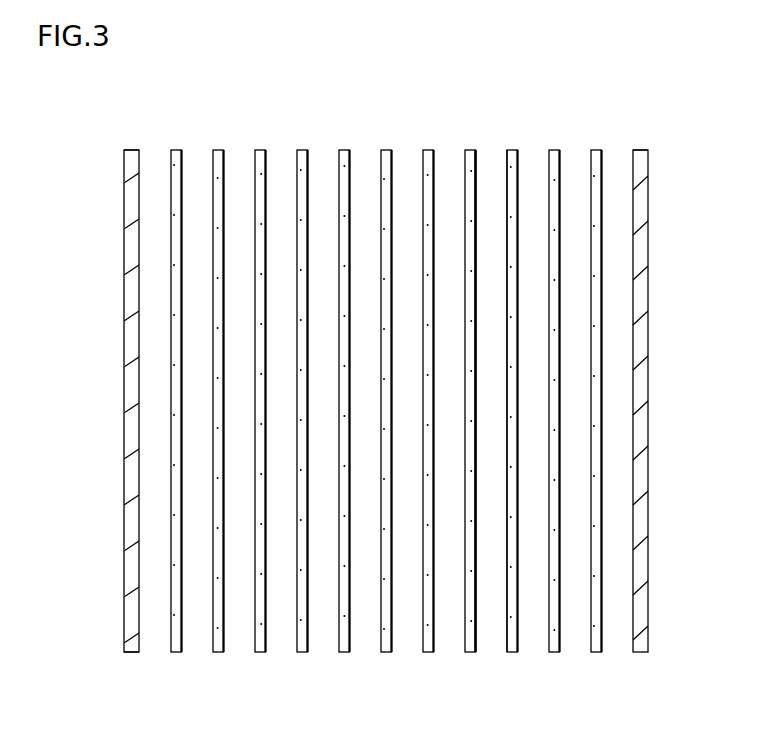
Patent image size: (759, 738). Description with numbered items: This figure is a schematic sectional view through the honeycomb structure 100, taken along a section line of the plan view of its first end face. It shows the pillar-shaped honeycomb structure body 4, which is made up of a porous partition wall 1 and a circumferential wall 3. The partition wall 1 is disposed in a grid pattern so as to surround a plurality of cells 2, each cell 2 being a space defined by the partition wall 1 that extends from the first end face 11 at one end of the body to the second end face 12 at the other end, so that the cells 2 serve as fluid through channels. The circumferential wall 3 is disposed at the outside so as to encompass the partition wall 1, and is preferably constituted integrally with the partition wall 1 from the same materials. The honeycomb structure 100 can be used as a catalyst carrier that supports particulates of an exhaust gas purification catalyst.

The honeycomb structure 100 is at (716, 54).
The partition wall 1 is at (553, 177).
The cell 2 is at (485, 208).
The circumferential wall 3 is at (128, 310).
The honeycomb structure body 4 is at (655, 161).
The first end face 11 is at (148, 129).
The second end face 12 is at (161, 664).